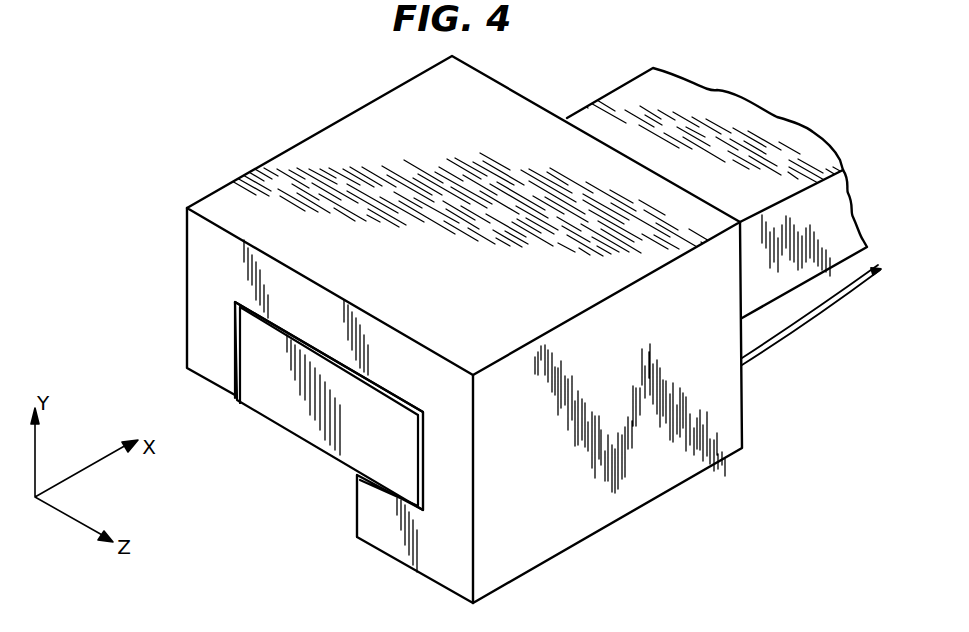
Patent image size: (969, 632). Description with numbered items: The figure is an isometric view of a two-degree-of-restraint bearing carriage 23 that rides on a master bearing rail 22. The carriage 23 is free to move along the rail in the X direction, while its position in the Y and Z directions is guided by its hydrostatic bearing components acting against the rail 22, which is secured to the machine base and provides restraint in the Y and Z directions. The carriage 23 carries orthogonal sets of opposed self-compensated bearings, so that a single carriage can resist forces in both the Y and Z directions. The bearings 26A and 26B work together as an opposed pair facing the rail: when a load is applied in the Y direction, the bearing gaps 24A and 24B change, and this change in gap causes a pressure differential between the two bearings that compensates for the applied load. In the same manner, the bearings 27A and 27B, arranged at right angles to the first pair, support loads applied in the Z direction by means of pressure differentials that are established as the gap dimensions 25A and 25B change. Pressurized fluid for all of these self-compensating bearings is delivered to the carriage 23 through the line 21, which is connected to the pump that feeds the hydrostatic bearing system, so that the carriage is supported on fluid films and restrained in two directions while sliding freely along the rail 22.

The line 21 is at (816, 316).
The master bearing rail 22 is at (876, 182).
The bearing carriage 23 is at (350, 140).
The bearing gap 24A is at (387, 392).
The bearing gap 24B is at (385, 495).
The gap dimension 25A is at (240, 368).
The gap dimension 25B is at (418, 453).
The bearing 26A is at (376, 386).
The bearing 26B is at (392, 498).
The bearing 27A is at (236, 338).
The bearing 27B is at (426, 487).